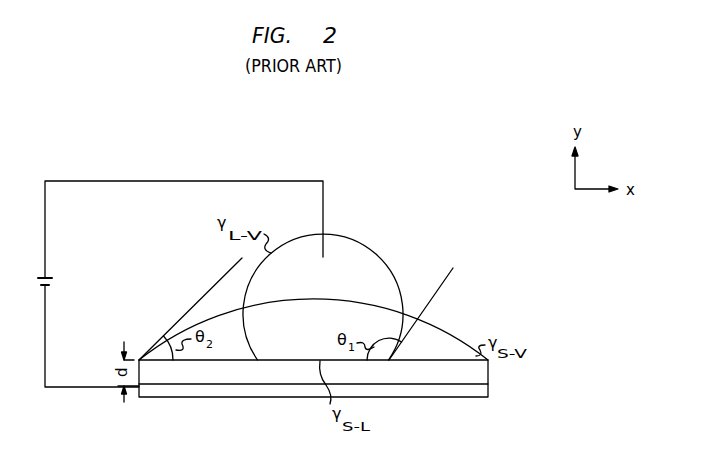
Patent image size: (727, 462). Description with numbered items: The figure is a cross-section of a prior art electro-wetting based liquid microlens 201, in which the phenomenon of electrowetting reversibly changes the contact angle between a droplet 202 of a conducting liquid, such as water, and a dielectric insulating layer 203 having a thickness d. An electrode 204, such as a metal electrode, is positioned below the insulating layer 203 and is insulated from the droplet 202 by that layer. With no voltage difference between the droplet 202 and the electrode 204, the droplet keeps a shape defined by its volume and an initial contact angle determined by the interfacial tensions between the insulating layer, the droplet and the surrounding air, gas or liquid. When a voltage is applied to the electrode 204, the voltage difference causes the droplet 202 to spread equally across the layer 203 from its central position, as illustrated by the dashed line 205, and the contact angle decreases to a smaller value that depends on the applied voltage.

The liquid microlens 201 is at (128, 255).
The droplet 202 is at (380, 255).
The dielectric insulating layer 203 is at (490, 383).
The electrode 204 is at (236, 397).
The dashed line 205 is at (448, 328).